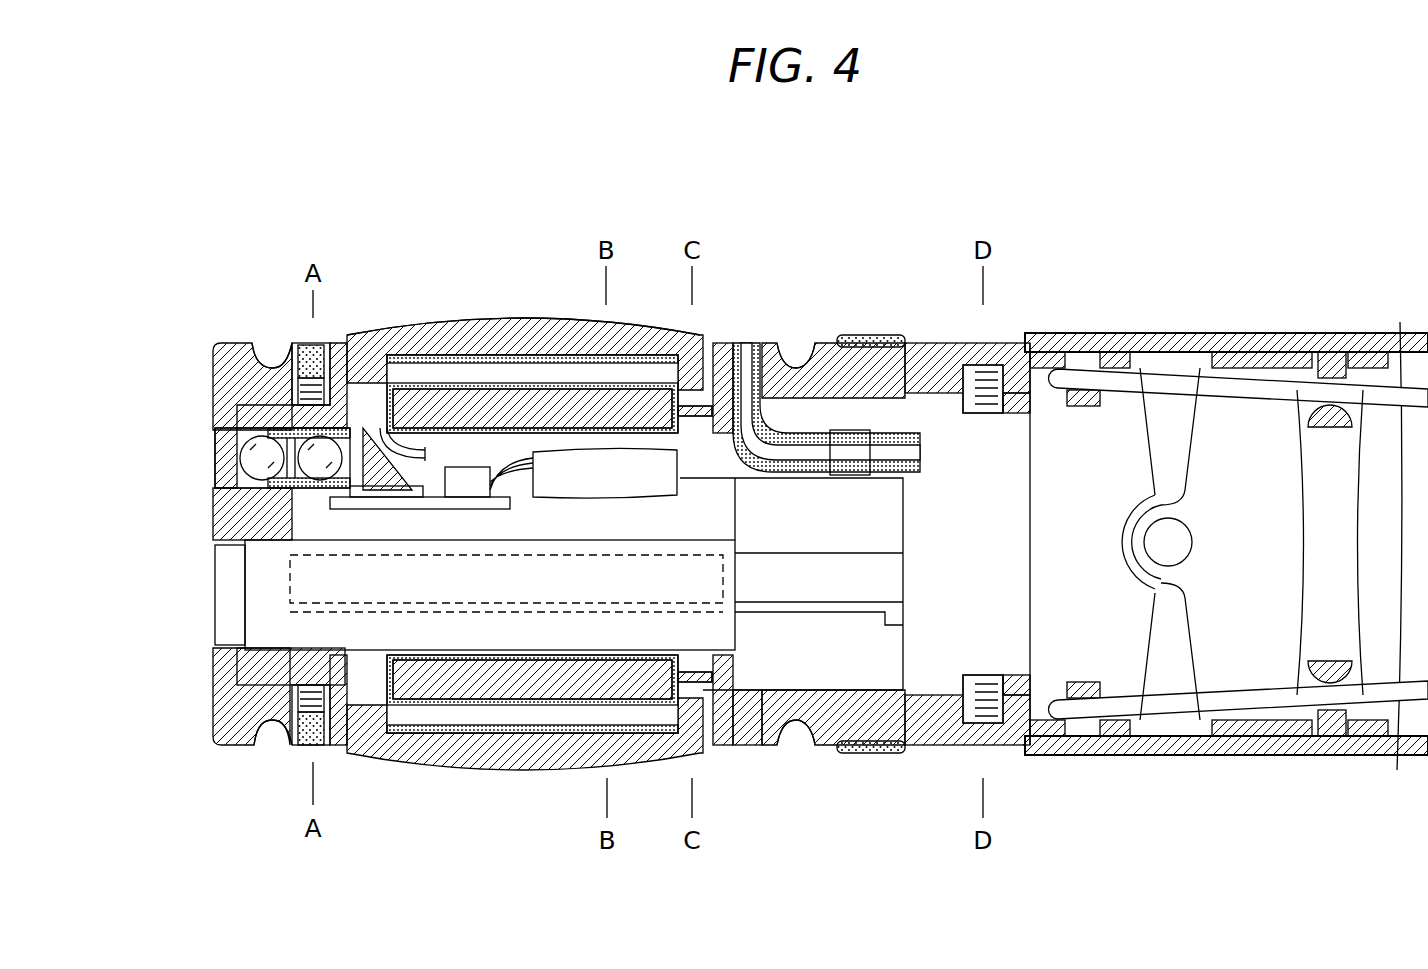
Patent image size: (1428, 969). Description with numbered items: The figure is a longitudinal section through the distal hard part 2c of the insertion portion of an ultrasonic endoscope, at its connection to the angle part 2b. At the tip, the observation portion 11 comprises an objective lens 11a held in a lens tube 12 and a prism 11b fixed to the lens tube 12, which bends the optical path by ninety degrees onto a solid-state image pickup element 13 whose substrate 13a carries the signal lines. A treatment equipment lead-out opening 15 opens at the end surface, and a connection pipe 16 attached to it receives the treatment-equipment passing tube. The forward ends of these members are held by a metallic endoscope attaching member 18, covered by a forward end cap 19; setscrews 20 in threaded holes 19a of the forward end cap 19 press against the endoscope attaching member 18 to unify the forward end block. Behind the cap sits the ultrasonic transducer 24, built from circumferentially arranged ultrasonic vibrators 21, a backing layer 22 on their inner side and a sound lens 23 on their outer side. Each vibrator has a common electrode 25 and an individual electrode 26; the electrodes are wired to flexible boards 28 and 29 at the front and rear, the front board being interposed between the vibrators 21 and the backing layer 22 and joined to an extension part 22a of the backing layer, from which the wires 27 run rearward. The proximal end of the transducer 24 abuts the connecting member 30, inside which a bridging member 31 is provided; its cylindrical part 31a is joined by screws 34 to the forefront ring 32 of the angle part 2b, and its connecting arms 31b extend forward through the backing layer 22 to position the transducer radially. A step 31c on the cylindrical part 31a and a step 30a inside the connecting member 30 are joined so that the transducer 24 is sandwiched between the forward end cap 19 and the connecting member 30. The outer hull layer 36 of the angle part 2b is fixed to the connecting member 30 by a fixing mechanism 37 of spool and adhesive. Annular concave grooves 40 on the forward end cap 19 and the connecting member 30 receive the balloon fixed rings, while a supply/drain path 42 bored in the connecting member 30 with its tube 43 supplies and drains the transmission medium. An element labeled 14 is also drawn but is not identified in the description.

The angle part 2b is at (1195, 333).
The distal hard part 2c is at (525, 500).
The observation portion 11 is at (205, 430).
The objective lens 11a is at (215, 487).
The prism 11b is at (368, 420).
The lens tube 12 is at (216, 383).
The solid-state image pickup element 13 is at (376, 486).
The substrate 13a is at (466, 498).
The wiring bundle 14 is at (572, 470).
The treatment equipment lead-out opening 15 is at (237, 609).
The connection pipe 16 is at (550, 680).
The endoscope attaching member 18 is at (236, 665).
The forward end cap 19 is at (215, 689).
The threaded holes 19a is at (308, 343).
The setscrews 20 is at (330, 348).
The ultrasonic vibrators 21 is at (512, 385).
The backing layer 22 is at (655, 700).
The extension part 22a is at (700, 748).
The sound lens 23 is at (456, 335).
The ultrasonic transducer 24 is at (498, 305).
The common electrode 25 is at (540, 362).
The individual electrode 26 is at (503, 760).
The wires 27 is at (430, 345).
The flexible board 28 is at (690, 345).
The flexible board 29 is at (371, 512).
The connecting member 30 is at (779, 585).
The step 30a is at (916, 748).
The bridging member 31 is at (908, 345).
The cylindrical part 31a is at (946, 748).
The connecting arms 31b is at (802, 478).
The step 31c is at (853, 338).
The forefront ring 32 is at (1042, 712).
The screws 34 is at (982, 350).
The outer hull layer 36 is at (1265, 757).
The fixing mechanism 37 is at (864, 750).
The annular concave grooves 40 is at (255, 343).
The supply/drain path 42 is at (718, 345).
The tube 43 is at (935, 348).